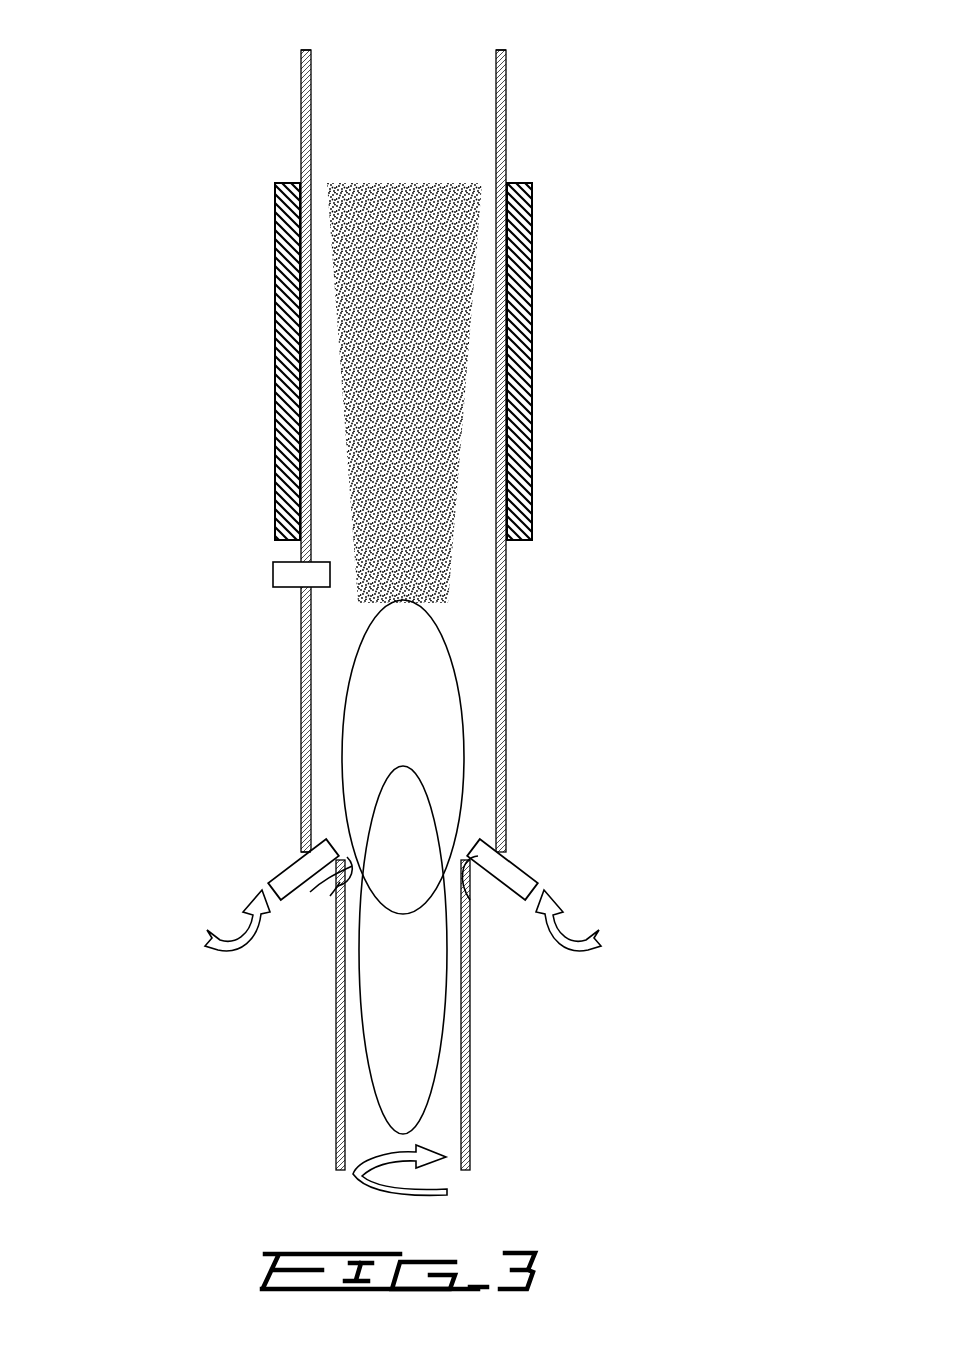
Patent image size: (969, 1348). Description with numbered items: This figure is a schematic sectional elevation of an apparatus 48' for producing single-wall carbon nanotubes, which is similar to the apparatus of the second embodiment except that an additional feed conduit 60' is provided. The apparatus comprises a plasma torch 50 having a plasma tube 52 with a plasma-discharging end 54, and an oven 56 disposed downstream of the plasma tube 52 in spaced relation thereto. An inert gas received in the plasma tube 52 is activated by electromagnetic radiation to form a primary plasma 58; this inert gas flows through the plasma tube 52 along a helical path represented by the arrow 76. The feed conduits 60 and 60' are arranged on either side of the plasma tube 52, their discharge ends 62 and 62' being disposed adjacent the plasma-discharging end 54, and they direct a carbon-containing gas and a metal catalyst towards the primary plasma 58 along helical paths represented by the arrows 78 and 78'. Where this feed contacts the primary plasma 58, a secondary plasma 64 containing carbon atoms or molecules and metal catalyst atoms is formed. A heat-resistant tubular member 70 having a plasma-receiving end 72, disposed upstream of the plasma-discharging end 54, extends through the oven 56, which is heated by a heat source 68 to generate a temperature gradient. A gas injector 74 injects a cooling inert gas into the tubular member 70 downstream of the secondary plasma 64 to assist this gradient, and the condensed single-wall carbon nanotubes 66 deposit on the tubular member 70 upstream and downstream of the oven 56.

The apparatus 48' is at (289, 82).
The plasma torch 50 is at (288, 1078).
The plasma tube 52 is at (310, 892).
The plasma-discharging end 54 is at (347, 857).
The oven 56 is at (532, 215).
The primary plasma 58 is at (407, 826).
The feed conduit 60 is at (590, 852).
The additional feed conduit 60' is at (219, 843).
The discharge end 62 is at (507, 935).
The discharge end 62' is at (286, 960).
The secondary plasma 64 is at (415, 651).
The single-wall carbon nanotubes 66 is at (405, 275).
The heat source 68 is at (511, 340).
The heat-resistant tubular member 70 is at (523, 691).
The plasma-receiving end 72 is at (300, 838).
The gas injector 74 is at (285, 574).
The arrow 76 is at (447, 1191).
The arrow 78 is at (619, 929).
The arrow 78' is at (185, 920).